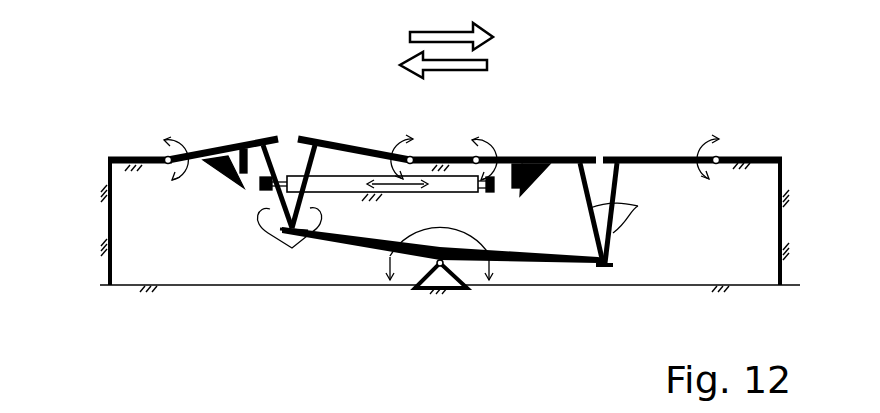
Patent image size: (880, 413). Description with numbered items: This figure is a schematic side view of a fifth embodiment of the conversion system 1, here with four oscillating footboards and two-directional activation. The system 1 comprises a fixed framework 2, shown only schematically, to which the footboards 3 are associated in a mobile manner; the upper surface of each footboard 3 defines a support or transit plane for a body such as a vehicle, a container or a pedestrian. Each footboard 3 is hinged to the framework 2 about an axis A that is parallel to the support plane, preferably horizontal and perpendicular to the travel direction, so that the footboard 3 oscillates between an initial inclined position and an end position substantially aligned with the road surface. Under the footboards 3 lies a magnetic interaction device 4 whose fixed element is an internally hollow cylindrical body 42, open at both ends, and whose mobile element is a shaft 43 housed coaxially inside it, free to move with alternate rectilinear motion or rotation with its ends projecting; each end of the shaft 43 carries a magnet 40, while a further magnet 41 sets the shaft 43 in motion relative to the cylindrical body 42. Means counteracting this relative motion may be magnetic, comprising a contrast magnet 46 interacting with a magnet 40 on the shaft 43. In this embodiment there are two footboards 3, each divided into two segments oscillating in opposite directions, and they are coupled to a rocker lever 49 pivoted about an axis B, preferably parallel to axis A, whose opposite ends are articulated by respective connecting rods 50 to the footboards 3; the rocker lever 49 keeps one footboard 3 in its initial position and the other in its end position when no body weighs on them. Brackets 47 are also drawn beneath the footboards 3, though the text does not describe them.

The system 1 is at (773, 101).
The fixed framework 2 is at (783, 222).
The footboard 3 is at (216, 133).
The magnetic interaction device 4 is at (360, 224).
The magnet 40 is at (278, 192).
The magnet 41 is at (250, 170).
The cylindrical body 42 is at (434, 192).
The shaft 43 is at (272, 192).
The contrast magnet 46 is at (514, 168).
The triangular bracket 47 is at (218, 170).
The rocker lever 49 is at (520, 267).
The connecting rods 50 is at (462, 235).
The axis A is at (165, 157).
The axis B is at (443, 285).